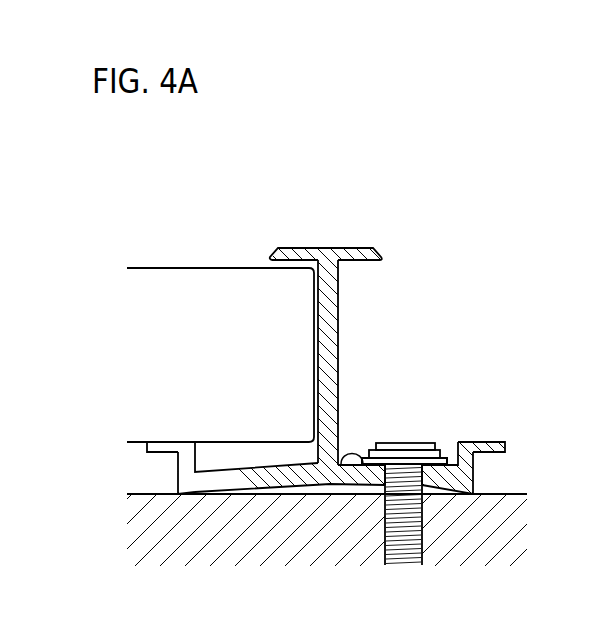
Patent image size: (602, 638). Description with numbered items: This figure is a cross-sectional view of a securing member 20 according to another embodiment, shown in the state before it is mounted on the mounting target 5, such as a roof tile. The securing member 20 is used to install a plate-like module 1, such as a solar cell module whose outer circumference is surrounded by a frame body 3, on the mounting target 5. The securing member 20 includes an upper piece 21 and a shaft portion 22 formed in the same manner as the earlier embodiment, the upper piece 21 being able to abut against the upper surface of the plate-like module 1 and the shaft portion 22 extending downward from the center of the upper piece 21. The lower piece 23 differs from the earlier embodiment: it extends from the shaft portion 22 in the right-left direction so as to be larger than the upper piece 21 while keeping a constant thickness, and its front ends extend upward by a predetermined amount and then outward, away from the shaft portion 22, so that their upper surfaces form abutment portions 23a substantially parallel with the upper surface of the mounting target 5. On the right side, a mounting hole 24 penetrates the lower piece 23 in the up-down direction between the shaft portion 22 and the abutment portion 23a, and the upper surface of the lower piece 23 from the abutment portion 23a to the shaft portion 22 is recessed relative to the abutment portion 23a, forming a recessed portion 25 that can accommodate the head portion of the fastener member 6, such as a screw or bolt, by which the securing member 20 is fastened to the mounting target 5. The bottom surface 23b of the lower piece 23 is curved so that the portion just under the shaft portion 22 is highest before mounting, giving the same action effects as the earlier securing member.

The plate-like module 1 is at (246, 264).
The frame body 3 is at (168, 276).
The mounting target 5 is at (149, 493).
The fastener member 6 is at (401, 461).
The securing member 20 is at (378, 241).
The upper piece 21 is at (303, 247).
The shaft portion 22 is at (332, 307).
The lower piece 23 is at (273, 472).
The abutment portion 23a is at (173, 441).
The bottom surface 23b is at (293, 492).
The mounting hole 24 is at (412, 477).
The recessed portion 25 is at (375, 466).